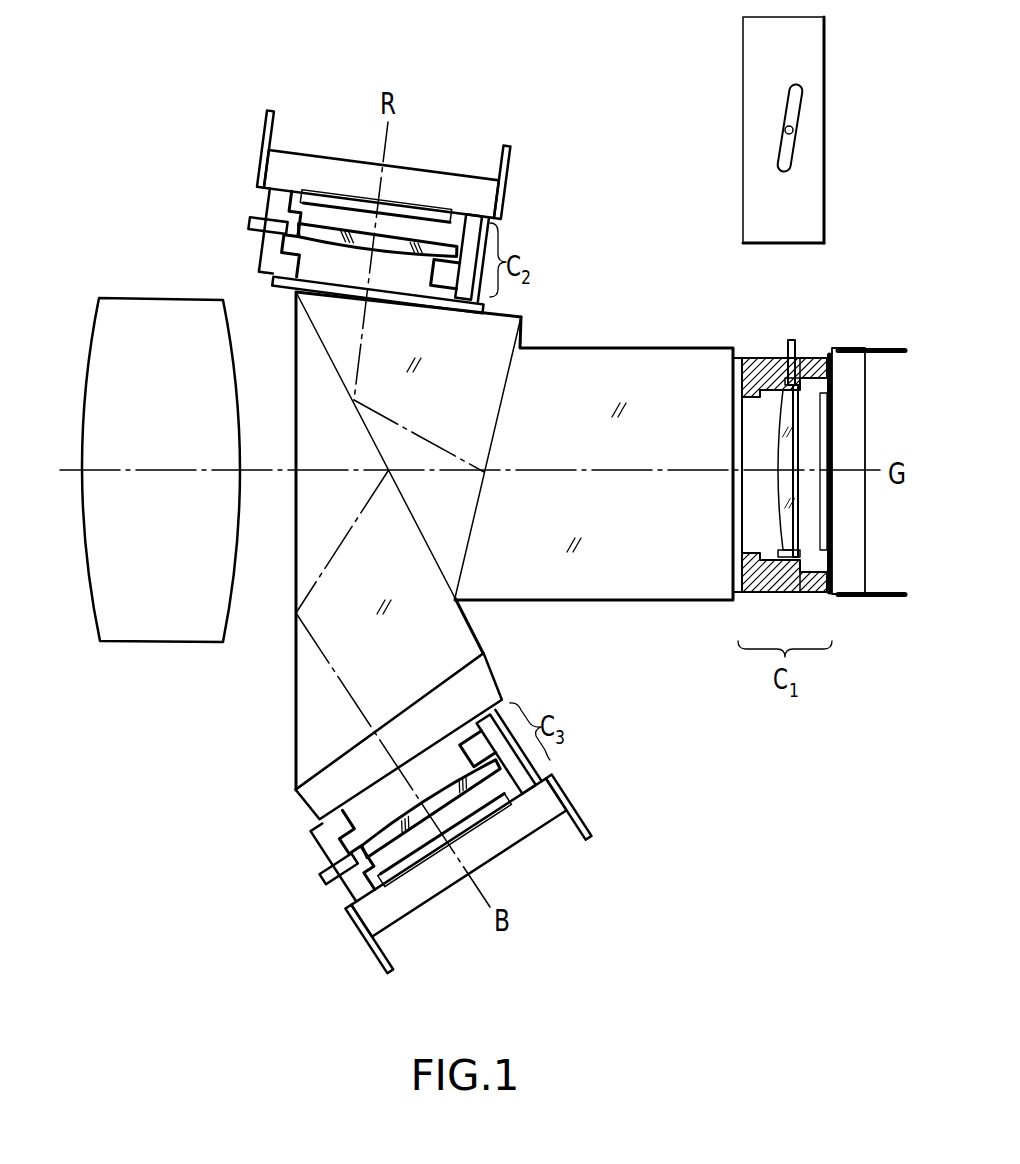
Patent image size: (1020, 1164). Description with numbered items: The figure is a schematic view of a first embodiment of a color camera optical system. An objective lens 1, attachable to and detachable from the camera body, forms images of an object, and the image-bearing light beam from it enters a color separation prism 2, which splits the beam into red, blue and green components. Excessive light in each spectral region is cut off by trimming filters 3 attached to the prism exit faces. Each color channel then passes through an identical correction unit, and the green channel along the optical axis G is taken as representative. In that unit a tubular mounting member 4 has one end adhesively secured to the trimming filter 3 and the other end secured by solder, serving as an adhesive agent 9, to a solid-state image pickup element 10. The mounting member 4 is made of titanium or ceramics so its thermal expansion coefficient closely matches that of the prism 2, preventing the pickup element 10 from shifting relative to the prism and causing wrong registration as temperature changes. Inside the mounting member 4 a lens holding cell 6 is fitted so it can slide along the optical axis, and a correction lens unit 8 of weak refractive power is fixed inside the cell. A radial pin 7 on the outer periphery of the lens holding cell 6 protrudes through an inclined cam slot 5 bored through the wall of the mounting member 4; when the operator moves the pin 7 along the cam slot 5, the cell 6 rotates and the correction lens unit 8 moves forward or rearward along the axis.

The objective lens 1 is at (140, 632).
The color separation prism 2 is at (500, 325).
The trimming filters 3 is at (273, 278).
The mounting member 4 is at (803, 358).
The inclined cam slot 5 is at (797, 93).
The lens holding cell 6 is at (780, 583).
The radial pin 7 is at (788, 340).
The correction lens unit 8 is at (800, 583).
The adhesive agent 9 is at (823, 355).
The solid-state image pickup element 10 is at (860, 427).